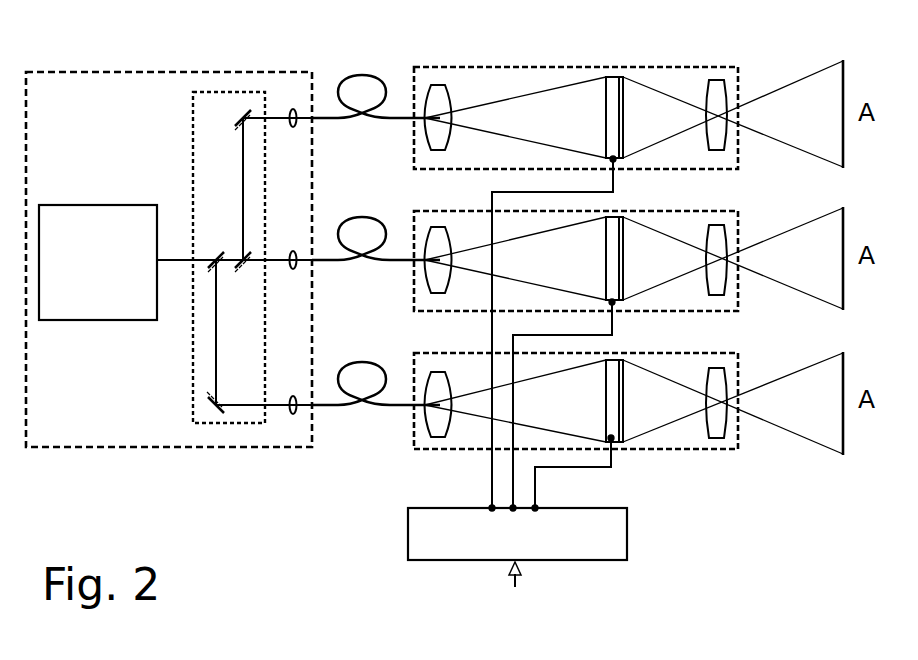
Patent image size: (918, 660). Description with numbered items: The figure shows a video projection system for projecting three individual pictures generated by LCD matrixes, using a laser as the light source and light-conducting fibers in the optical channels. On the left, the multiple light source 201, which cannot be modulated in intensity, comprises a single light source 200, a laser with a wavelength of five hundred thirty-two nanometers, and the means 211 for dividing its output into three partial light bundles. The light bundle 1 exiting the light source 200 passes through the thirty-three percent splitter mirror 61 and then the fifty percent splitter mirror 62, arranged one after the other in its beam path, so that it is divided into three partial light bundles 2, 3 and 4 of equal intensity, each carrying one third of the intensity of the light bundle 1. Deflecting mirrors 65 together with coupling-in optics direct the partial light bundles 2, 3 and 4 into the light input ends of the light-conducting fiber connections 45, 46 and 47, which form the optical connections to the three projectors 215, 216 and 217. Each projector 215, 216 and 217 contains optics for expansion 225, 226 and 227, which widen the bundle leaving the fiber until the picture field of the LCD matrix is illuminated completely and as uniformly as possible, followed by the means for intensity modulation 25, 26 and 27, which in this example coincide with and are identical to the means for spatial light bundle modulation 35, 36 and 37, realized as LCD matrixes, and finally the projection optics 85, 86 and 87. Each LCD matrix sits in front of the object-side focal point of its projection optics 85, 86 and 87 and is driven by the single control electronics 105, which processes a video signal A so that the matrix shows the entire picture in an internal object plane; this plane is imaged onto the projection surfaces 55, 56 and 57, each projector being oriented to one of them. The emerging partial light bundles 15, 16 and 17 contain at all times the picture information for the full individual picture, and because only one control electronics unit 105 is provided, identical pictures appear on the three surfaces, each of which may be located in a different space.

The light bundle 1 is at (163, 260).
The partial light bundle 2 is at (217, 340).
The partial light bundle 3 is at (243, 208).
The partial light bundle 4 is at (255, 260).
The partial light bundle 15 is at (793, 143).
The partial light bundle 16 is at (790, 288).
The partial light bundle 17 is at (788, 428).
The means for intensity modulation 25 is at (654, 94).
The means for intensity modulation 26 is at (653, 240).
The means for intensity modulation 27 is at (652, 379).
The means for spatial light bundle modulation 35 is at (616, 77).
The means for spatial light bundle modulation 36 is at (616, 217).
The means for spatial light bundle modulation 37 is at (616, 360).
The light-conducting fiber connection 45 is at (357, 76).
The light-conducting fiber connection 46 is at (355, 221).
The light-conducting fiber connection 47 is at (356, 366).
The projection surface 55 is at (843, 60).
The projection surface 56 is at (842, 207).
The projection surface 57 is at (842, 352).
The 33-% splitter mirror 61 is at (218, 255).
The 50-% splitter mirror 62 is at (246, 268).
The deflecting mirror 65 is at (233, 121).
The projection optics 85 is at (727, 88).
The projection optics 86 is at (724, 232).
The projection optics 87 is at (722, 373).
The control electronics 105 is at (517, 388).
The light source 200 is at (98, 262).
The multiple light source 201 is at (218, 72).
The means for dividing into three partial light bundles 211 is at (193, 333).
The projector 215 is at (737, 65).
The projector 216 is at (733, 210).
The projector 217 is at (732, 352).
The optics for expansion 225 is at (440, 85).
The optics for expansion 226 is at (440, 228).
The optics for expansion 227 is at (440, 372).